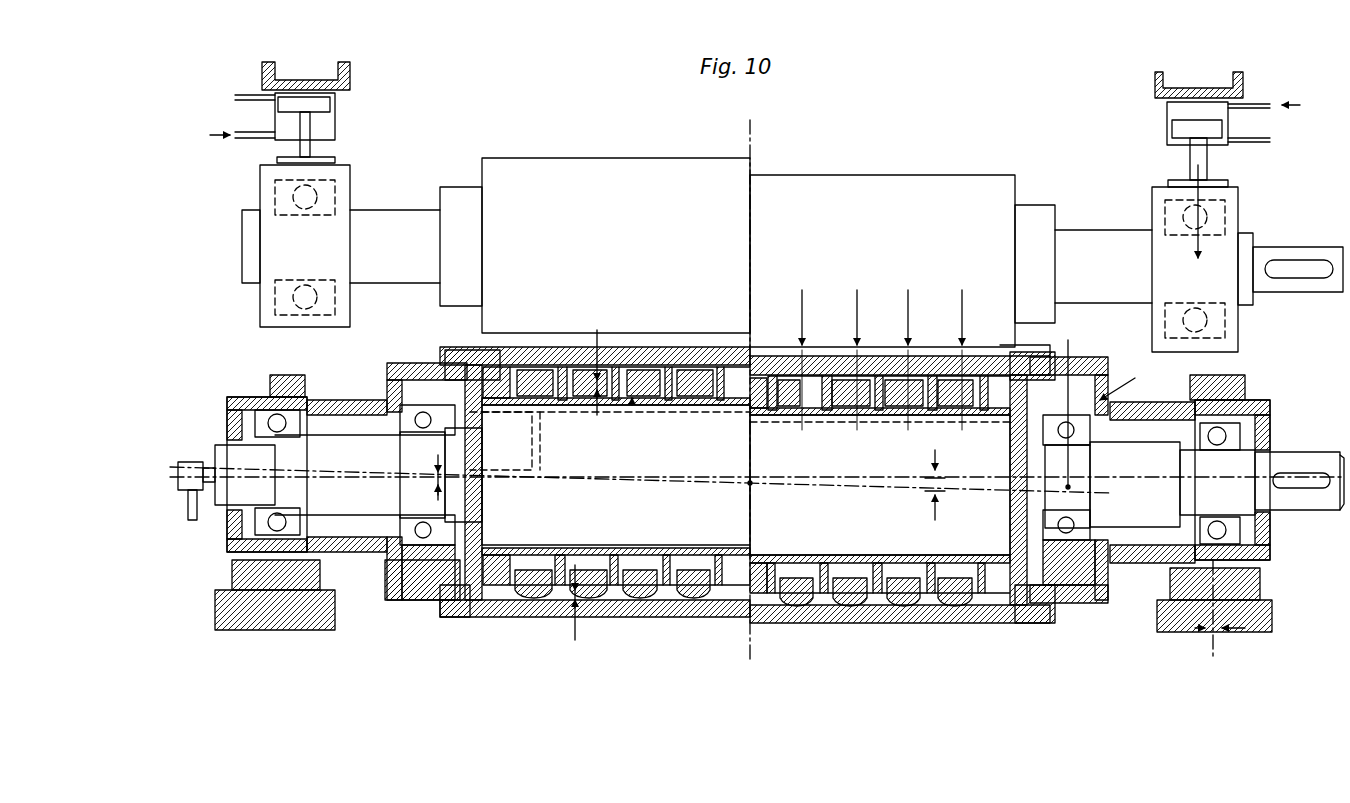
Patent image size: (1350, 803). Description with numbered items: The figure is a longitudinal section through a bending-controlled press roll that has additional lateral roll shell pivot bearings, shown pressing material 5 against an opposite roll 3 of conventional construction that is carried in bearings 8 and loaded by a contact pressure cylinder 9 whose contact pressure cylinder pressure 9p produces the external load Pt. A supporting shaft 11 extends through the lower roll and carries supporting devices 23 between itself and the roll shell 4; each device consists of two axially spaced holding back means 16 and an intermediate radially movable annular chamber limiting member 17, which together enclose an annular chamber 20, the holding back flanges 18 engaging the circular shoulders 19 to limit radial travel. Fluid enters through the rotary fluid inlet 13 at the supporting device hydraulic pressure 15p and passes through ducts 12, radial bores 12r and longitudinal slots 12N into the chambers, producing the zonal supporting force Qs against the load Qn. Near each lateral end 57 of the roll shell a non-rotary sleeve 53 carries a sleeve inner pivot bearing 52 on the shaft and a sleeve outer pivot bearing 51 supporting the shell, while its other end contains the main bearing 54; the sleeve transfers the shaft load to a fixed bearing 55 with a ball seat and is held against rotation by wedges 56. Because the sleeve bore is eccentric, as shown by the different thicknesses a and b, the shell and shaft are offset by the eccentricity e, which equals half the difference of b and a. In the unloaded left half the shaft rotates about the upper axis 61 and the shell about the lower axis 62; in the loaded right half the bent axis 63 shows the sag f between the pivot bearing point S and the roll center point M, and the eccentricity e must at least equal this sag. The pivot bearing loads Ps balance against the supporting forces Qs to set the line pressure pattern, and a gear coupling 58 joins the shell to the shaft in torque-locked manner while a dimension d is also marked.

The opposite roll 3 is at (568, 165).
The roll shell 4 is at (628, 618).
The material to be pressed 5 is at (996, 345).
The bearings 8 is at (346, 170).
The contact pressure cylinder 9 is at (330, 108).
The contact pressure cylinder pressure 9p is at (1290, 105).
The supporting shaft 11 is at (698, 580).
The ducts 12 is at (636, 355).
The longitudinal slots 12N is at (632, 412).
The radial bores 12r is at (537, 460).
The rotary fluid inlet 13 is at (190, 462).
The supporting device hydraulic pressure 15p is at (195, 525).
The holding back means 16 is at (579, 362).
The annular chamber limiting member 17 is at (546, 362).
The holding back flanges 18 is at (681, 363).
The circular shoulders 19 is at (656, 402).
The annular chamber 20 is at (588, 402).
The supporting device 23 is at (516, 400).
The pivot bearing 51 is at (416, 375).
The pivot bearing 52 is at (405, 422).
The sleeve 53 is at (317, 399).
The main bearing 54 is at (238, 402).
The fixed bearing 55 is at (288, 588).
The wedges 56 is at (285, 376).
The lateral ends of roll shell 57 is at (452, 355).
The gear coupling 58 is at (499, 361).
The supporting shaft axis 61 is at (688, 477).
The roll shell axis 62 is at (650, 487).
The bent axis 63 is at (862, 483).
The load Qn is at (855, 300).
The zonal supporting force Qs is at (844, 422).
The external load Pt is at (1217, 194).
The lateral roll shell pivot bearing loads Ps is at (1128, 376).
The roll center point M is at (737, 494).
The angle of inclination / pivot bearing point S is at (1068, 427).
The bend or sag f is at (938, 481).
The eccentricity e is at (508, 487).
The displacement d is at (1220, 610).
The thickness a is at (410, 395).
The thickness b is at (404, 559).